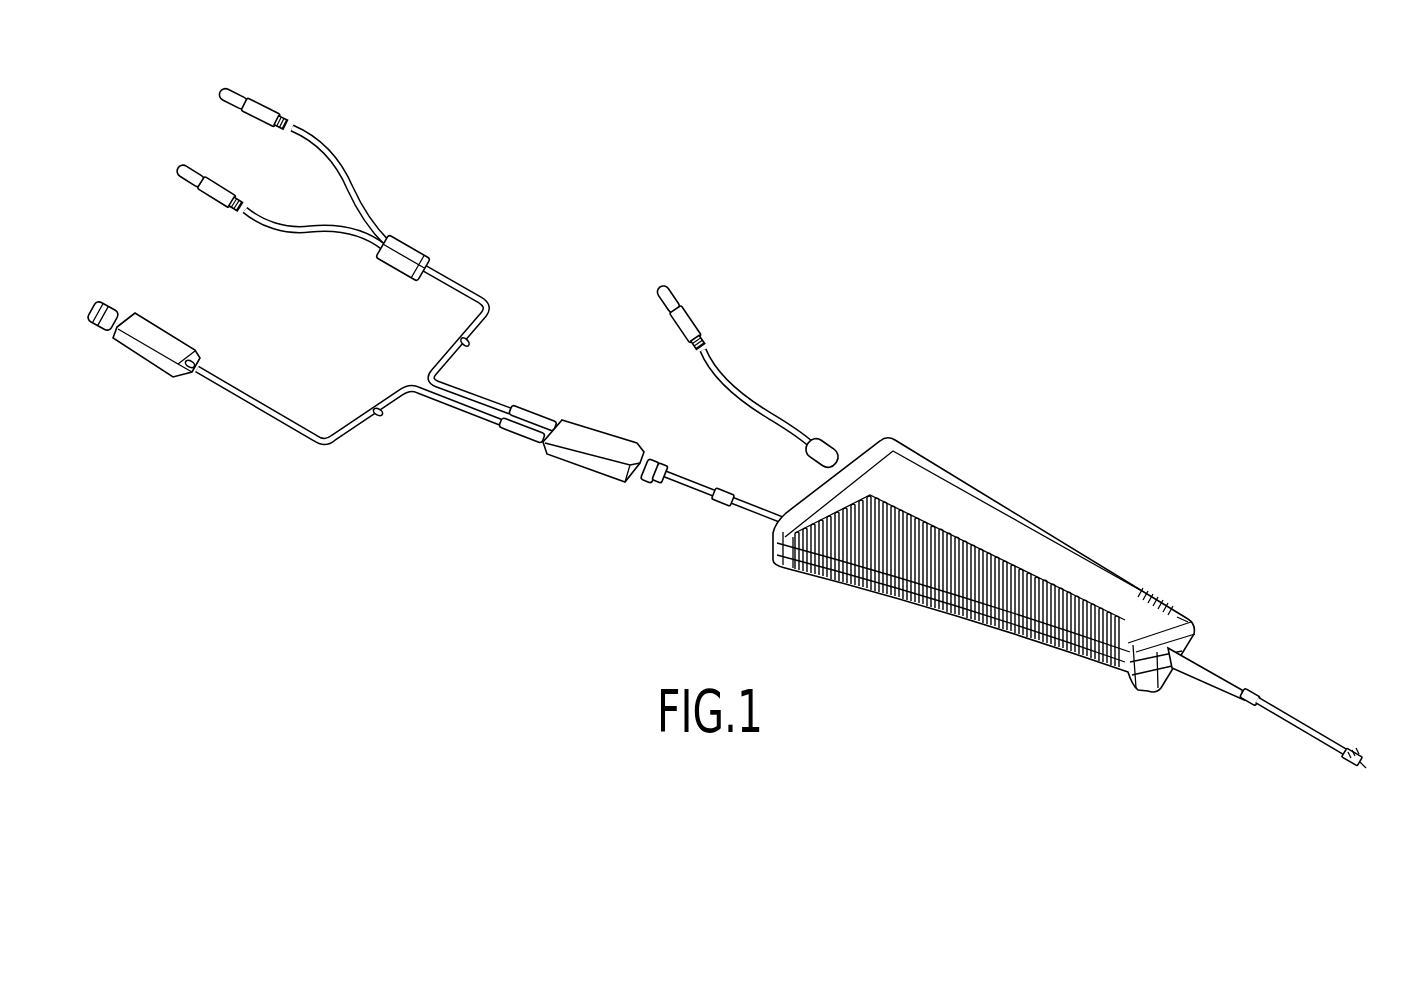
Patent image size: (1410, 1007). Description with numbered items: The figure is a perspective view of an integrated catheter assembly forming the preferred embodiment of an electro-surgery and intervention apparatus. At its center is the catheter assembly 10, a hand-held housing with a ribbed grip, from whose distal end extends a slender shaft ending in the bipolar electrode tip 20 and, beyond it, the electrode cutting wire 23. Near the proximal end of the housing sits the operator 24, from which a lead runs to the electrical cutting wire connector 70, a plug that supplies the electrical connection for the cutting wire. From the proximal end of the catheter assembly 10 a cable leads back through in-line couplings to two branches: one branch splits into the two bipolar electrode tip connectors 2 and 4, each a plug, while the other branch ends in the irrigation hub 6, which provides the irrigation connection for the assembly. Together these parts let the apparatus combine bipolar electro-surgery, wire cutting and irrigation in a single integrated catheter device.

The bipolar electrode tip connector 2 is at (258, 108).
The bipolar electrode tip connector 4 is at (218, 186).
The irrigation hub 6 is at (140, 360).
The catheter assembly 10 is at (1085, 549).
The bipolar electrode tip 20 is at (1289, 753).
The electrode cutting wire 23 is at (1373, 771).
The operator 24 is at (838, 447).
The electrical cutting wire connector 70 is at (697, 316).